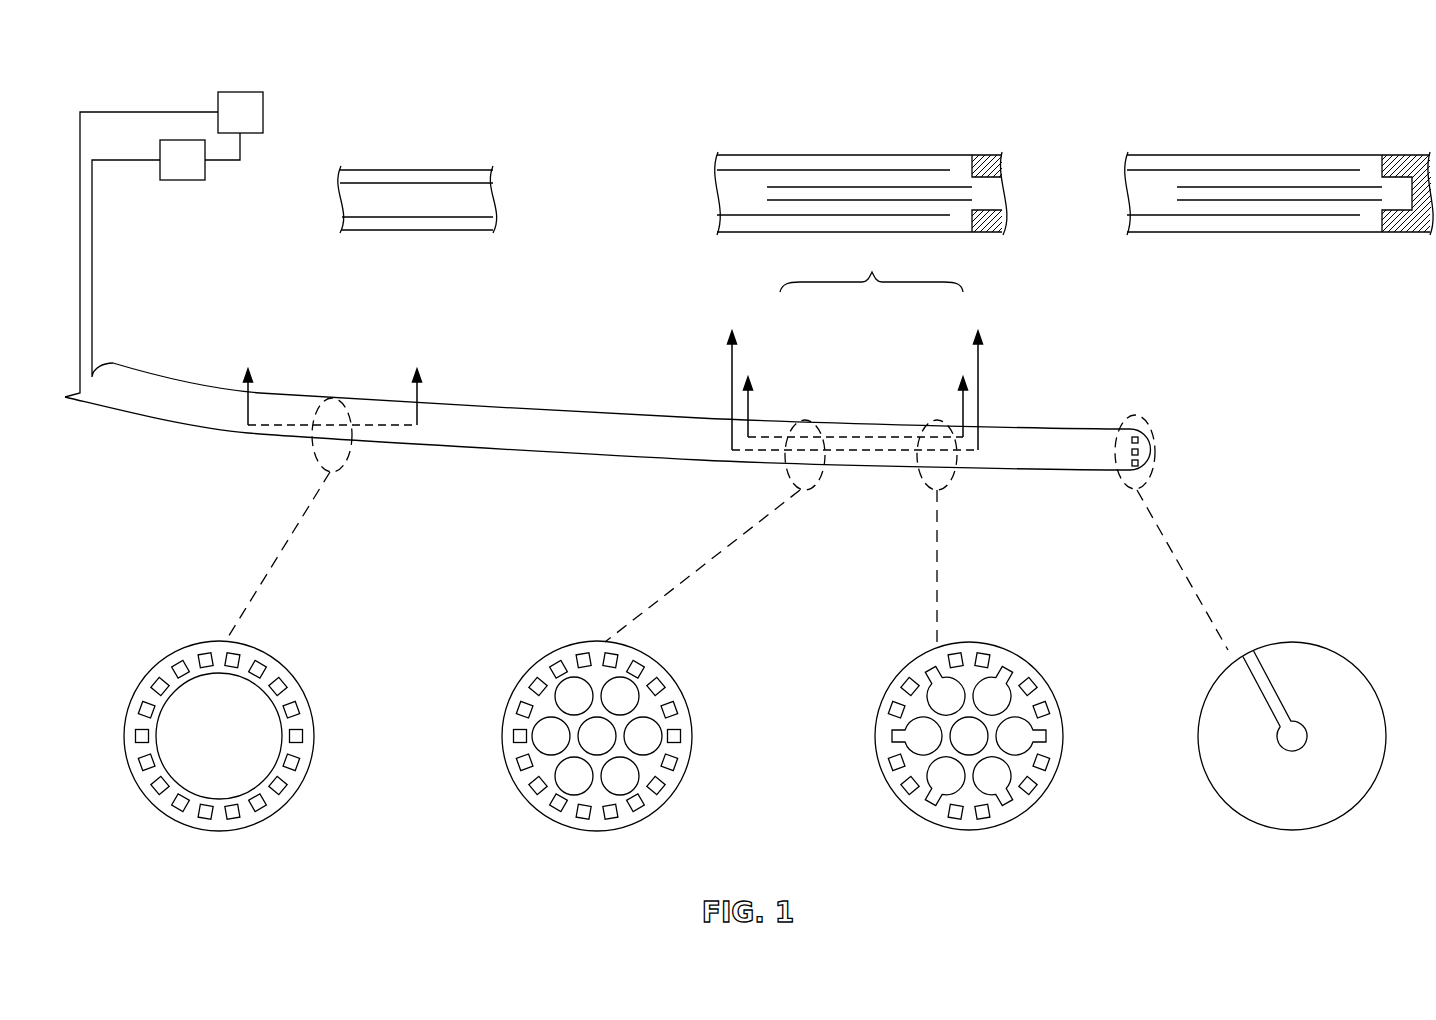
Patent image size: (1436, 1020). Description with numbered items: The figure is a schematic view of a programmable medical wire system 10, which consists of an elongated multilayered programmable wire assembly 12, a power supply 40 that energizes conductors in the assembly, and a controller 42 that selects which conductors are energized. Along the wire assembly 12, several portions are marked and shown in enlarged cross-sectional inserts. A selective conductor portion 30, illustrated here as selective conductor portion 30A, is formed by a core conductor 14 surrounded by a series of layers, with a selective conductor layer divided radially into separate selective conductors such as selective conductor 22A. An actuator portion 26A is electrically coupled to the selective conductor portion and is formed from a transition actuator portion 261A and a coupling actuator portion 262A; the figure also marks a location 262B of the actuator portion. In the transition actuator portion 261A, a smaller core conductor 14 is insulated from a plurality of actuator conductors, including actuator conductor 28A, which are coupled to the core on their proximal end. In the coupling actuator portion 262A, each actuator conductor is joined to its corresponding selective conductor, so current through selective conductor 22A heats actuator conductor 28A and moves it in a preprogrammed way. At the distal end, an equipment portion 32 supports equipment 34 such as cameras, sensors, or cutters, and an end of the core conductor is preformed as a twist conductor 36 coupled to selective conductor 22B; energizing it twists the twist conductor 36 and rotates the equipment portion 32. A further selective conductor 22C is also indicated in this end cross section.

The programmable medical wire system 10 is at (366, 58).
The programmable wire assembly 12 is at (455, 170).
The core conductor 14 is at (217, 737).
The selective conductor 22A is at (682, 740).
The selective conductor 22B is at (1252, 660).
The electrode element 22C is at (1350, 787).
The actuator portion 26A is at (688, 655).
The transition actuator portion 261A is at (805, 405).
The coupling actuator portion 262A is at (1040, 670).
The second intermediate segment location 262B is at (937, 408).
The actuator conductor 28A is at (640, 737).
The selective conductor portion 30 is at (270, 630).
The selective conductor portion 30A is at (335, 398).
The equipment portion 32 is at (1140, 422).
The equipment 34 is at (1140, 455).
The twist conductor 36 is at (1305, 740).
The power supply 40 is at (263, 110).
The controller 42 is at (185, 180).